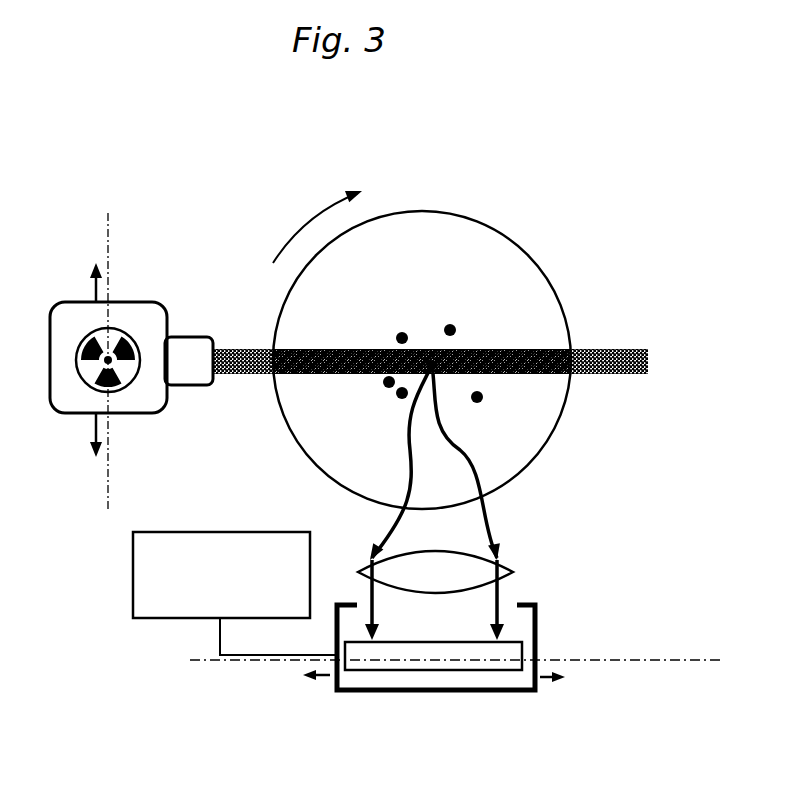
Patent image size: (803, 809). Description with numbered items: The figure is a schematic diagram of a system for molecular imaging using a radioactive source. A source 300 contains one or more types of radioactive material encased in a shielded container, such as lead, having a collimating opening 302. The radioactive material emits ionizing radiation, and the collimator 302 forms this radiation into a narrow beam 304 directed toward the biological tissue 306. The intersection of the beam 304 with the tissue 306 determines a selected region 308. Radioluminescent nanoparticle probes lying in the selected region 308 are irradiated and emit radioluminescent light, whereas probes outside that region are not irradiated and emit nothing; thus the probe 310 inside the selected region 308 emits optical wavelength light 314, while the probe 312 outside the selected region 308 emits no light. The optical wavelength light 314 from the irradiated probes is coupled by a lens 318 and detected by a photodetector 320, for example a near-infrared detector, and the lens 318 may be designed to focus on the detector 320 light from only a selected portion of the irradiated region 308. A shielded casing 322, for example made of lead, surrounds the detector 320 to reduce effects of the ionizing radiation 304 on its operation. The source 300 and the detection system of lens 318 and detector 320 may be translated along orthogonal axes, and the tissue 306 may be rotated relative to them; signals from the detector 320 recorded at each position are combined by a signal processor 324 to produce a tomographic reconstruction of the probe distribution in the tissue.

The source 300 is at (88, 302).
The collimating opening 302 is at (195, 337).
The beam 304 is at (258, 349).
The biological tissue 306 is at (532, 258).
The selected region 308 is at (545, 349).
The probe 310 is at (440, 353).
The probe 312 is at (400, 332).
The optical wavelength light 314 is at (490, 515).
The lens 318 is at (513, 572).
The photodetector 320 is at (540, 641).
The shielded casing 322 is at (522, 693).
The signal processor 324 is at (235, 593).